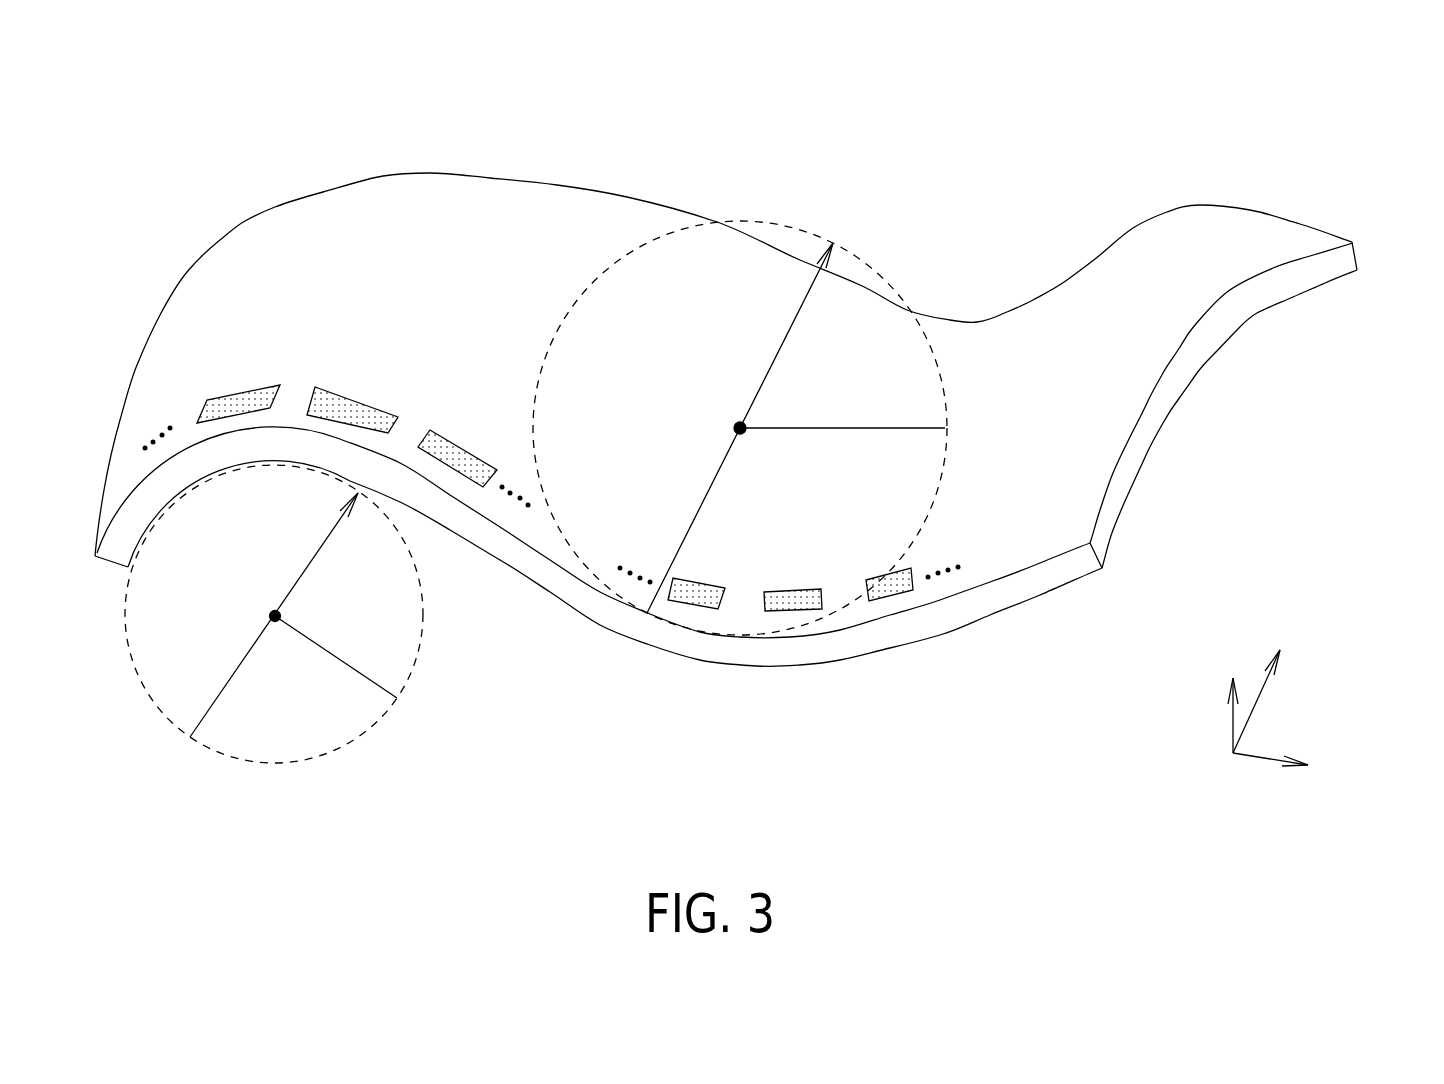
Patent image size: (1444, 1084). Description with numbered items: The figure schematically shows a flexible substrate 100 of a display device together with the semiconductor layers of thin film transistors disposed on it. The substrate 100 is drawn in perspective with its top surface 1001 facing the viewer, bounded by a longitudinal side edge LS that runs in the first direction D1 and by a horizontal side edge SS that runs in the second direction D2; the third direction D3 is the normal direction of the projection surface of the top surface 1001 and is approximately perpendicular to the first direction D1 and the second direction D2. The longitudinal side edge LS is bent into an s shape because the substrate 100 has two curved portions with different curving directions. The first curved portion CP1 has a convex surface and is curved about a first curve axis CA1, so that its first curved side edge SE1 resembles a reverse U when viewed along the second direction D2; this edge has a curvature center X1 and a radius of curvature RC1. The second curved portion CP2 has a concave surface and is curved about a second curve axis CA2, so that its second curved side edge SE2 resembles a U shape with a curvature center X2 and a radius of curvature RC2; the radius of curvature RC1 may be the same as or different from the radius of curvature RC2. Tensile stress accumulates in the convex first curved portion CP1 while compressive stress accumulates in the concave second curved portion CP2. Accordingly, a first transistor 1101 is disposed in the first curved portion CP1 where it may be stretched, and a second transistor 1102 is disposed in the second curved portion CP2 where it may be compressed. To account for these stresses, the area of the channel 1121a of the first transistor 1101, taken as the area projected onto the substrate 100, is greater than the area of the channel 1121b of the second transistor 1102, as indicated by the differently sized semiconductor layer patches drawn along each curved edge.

The substrate 100 is at (767, 364).
The top surface 1001 is at (625, 228).
The horizontal side edge SS is at (1170, 347).
The channel of the first transistor 1121a is at (337, 383).
The first transistor 1101 is at (398, 460).
The channel of the second transistor 1121b is at (789, 665).
The second transistor 1102 is at (807, 606).
The first curved side edge SE1 is at (337, 383).
The second curved side edge SE2 is at (766, 665).
The longitudinal side edge LS is at (337, 383).
The first curved portion CP1 is at (298, 407).
The second curved portion CP2 is at (830, 318).
The curvature center of the first curved side edge X1 is at (267, 617).
The curvature center of the second curved side edge X2 is at (733, 428).
The first curve axis CA1 is at (250, 652).
The second curve axis CA2 is at (773, 363).
The radius of curvature of the first curved side edge RC1 is at (337, 657).
The radius of curvature of the second curved side edge RC2 is at (842, 428).
The first direction D1 is at (1291, 755).
The second direction D2 is at (1276, 701).
The third direction D3 is at (1233, 697).